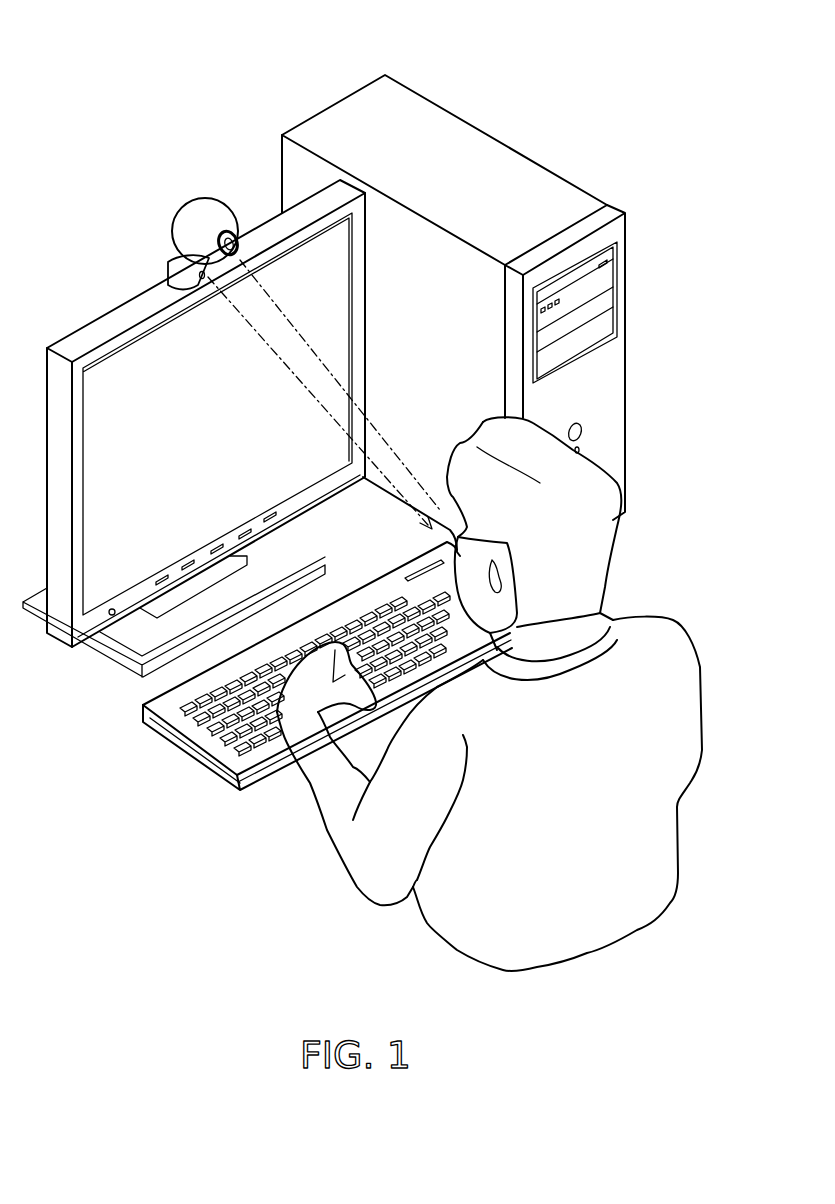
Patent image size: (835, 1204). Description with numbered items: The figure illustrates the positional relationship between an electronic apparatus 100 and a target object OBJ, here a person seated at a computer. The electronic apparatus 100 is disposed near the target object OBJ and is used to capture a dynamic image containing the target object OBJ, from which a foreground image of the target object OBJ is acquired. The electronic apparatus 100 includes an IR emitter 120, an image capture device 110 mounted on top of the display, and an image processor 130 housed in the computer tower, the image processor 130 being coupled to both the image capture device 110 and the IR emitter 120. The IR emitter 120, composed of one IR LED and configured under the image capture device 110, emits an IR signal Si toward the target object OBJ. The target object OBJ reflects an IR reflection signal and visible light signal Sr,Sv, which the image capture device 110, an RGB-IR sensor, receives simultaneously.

The electronic apparatus 100 is at (107, 31).
The image capture device 110 is at (243, 237).
The IR emitter 120 is at (200, 275).
The image processor 130 is at (525, 173).
The IR signal Si is at (265, 347).
The IR reflection signal and visible light signal Sr,Sv is at (305, 347).
The target object OBJ is at (670, 637).